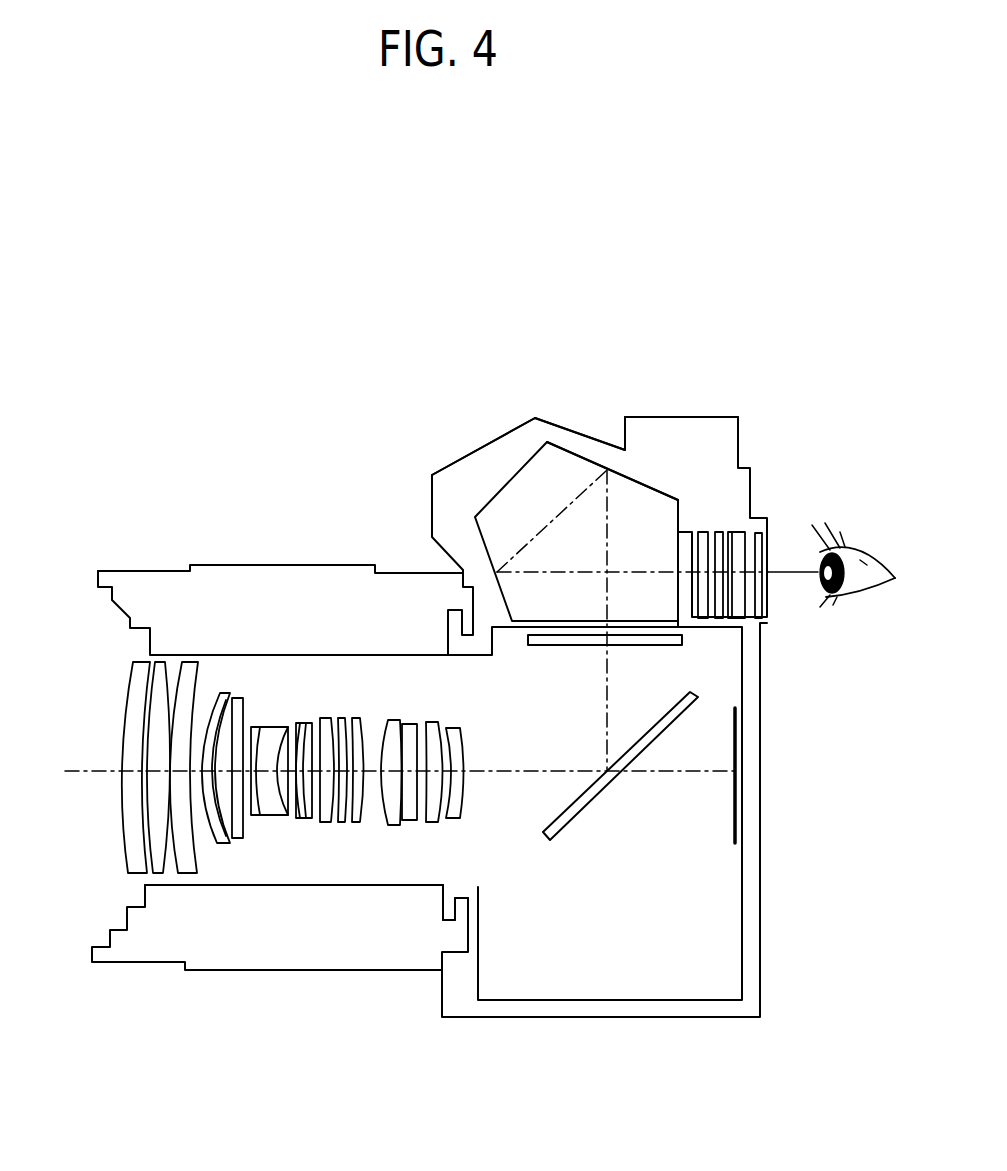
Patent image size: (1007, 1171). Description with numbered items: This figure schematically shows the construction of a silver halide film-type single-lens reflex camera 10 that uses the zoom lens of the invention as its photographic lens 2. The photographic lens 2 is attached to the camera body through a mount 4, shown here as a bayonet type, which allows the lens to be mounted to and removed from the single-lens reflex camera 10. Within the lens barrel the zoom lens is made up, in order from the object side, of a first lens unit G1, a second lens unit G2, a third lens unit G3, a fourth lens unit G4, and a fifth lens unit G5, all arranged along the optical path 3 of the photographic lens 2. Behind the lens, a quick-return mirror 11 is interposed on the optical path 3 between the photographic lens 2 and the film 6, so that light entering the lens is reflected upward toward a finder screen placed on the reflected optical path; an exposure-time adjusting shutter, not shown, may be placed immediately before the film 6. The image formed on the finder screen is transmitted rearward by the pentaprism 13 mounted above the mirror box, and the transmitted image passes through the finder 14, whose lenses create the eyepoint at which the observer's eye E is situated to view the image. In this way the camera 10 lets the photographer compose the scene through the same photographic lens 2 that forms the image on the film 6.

The photographic lens 2 is at (124, 855).
The optical path 3 is at (498, 780).
The mount 4 is at (448, 937).
The film 6 is at (733, 813).
The single-lens reflex camera 10 is at (760, 921).
The quick-return mirror 11 is at (557, 647).
The pentaprism 13 is at (648, 483).
The finder 14 is at (725, 626).
The observer's eye E is at (870, 550).
The first lens unit G1 is at (120, 882).
The second lens unit G2 is at (200, 855).
The third lens unit G3 is at (250, 835).
The fourth lens unit G4 is at (320, 835).
The fifth lens unit G5 is at (378, 835).